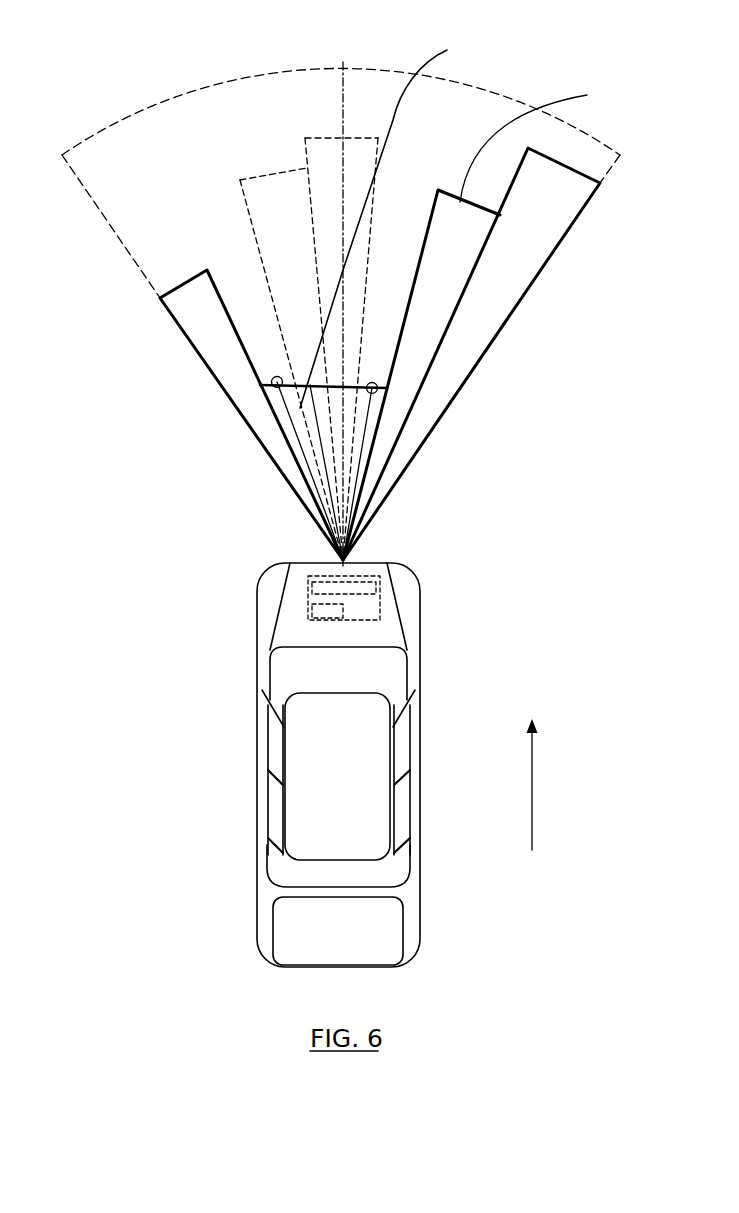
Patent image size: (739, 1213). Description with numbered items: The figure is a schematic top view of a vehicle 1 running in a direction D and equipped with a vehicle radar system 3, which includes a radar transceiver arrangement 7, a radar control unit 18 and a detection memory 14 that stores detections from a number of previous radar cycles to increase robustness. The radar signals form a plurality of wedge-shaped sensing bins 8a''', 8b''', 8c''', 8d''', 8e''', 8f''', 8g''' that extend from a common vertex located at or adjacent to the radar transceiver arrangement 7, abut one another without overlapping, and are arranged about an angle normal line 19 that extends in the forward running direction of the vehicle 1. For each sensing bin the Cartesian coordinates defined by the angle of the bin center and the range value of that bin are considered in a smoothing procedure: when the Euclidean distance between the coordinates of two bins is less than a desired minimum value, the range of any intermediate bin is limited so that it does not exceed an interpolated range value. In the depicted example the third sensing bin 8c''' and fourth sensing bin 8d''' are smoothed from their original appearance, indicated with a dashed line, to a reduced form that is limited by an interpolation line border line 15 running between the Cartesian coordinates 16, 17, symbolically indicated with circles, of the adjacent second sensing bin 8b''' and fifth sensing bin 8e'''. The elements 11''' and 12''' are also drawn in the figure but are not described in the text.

The vehicle 1 is at (347, 758).
The vehicle radar system 3 is at (308, 582).
The radar transceiver arrangement 7 is at (312, 596).
The radar control unit 18 is at (312, 617).
The detection memory 14 is at (380, 595).
The angle normal line 19 is at (337, 127).
The interpolation line border line 15 is at (389, 223).
The Cartesian coordinate 16 is at (278, 380).
The Cartesian coordinate 17 is at (375, 385).
The object 11''' is at (549, 140).
The previous detection field 12''' is at (427, 349).
The sensing bin 8a''' is at (224, 415).
The second sensing bin 8b''' is at (223, 471).
The third sensing bin 8c''' is at (224, 472).
The fourth sensing bin 8d''' is at (231, 315).
The fifth sensing bin 8e''' is at (479, 474).
The sensing bin 8f''' is at (476, 354).
The sensing bin 8g''' is at (479, 375).
The direction D is at (525, 784).